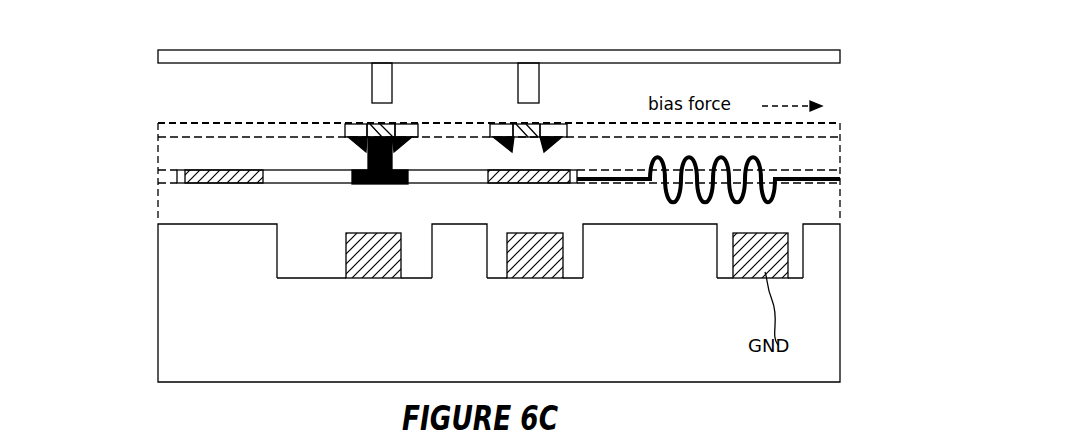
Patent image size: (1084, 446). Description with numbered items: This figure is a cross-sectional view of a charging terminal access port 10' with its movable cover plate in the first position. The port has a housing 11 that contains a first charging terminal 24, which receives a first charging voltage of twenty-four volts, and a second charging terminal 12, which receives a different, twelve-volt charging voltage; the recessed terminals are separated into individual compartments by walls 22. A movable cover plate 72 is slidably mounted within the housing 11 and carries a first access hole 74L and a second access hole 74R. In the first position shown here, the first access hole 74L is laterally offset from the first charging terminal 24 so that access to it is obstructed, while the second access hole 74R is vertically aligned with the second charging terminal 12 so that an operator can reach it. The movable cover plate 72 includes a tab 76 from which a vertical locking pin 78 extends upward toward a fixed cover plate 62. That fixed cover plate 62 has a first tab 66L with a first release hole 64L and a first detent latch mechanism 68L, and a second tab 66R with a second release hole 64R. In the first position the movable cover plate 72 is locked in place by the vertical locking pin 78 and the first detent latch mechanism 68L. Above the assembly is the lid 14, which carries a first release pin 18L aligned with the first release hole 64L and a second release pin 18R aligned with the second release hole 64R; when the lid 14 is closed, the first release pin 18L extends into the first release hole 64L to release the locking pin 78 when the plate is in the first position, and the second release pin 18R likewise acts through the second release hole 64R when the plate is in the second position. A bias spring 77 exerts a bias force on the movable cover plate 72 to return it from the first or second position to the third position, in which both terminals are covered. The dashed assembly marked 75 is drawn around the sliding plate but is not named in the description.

The charging terminal access port 10' is at (81, 296).
The housing 11 is at (830, 330).
The second charging terminal 12 is at (522, 280).
The lid 14 is at (840, 62).
The first release pin 18L is at (392, 83).
The second release pin 18R is at (539, 84).
The walls 22 is at (813, 252).
The first charging terminal 24 is at (370, 280).
The fixed cover plate 62 is at (158, 133).
The first release hole 64L is at (388, 127).
The second release hole 64R is at (510, 128).
The first tab 66L is at (353, 129).
The second tab 66R is at (549, 128).
The first detent latch mechanism 68L is at (351, 140).
The movable cover plate 72 is at (183, 187).
The first access hole 74L is at (212, 185).
The second access hole 74R is at (510, 186).
The slider assembly 75 is at (158, 184).
The tab 76 is at (352, 187).
The bias spring 77 is at (765, 174).
The vertical locking pin 78 is at (395, 158).